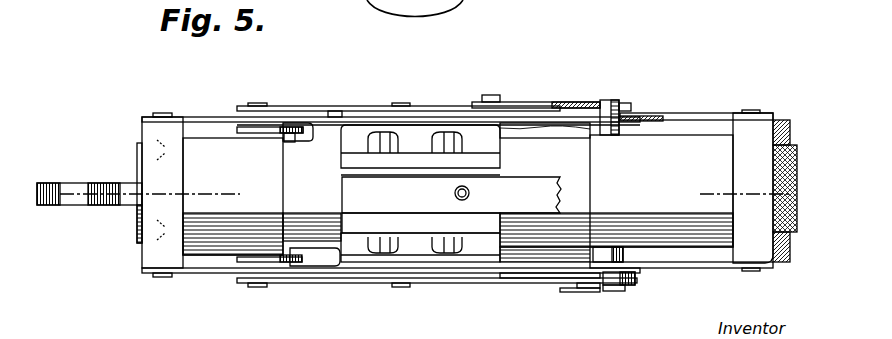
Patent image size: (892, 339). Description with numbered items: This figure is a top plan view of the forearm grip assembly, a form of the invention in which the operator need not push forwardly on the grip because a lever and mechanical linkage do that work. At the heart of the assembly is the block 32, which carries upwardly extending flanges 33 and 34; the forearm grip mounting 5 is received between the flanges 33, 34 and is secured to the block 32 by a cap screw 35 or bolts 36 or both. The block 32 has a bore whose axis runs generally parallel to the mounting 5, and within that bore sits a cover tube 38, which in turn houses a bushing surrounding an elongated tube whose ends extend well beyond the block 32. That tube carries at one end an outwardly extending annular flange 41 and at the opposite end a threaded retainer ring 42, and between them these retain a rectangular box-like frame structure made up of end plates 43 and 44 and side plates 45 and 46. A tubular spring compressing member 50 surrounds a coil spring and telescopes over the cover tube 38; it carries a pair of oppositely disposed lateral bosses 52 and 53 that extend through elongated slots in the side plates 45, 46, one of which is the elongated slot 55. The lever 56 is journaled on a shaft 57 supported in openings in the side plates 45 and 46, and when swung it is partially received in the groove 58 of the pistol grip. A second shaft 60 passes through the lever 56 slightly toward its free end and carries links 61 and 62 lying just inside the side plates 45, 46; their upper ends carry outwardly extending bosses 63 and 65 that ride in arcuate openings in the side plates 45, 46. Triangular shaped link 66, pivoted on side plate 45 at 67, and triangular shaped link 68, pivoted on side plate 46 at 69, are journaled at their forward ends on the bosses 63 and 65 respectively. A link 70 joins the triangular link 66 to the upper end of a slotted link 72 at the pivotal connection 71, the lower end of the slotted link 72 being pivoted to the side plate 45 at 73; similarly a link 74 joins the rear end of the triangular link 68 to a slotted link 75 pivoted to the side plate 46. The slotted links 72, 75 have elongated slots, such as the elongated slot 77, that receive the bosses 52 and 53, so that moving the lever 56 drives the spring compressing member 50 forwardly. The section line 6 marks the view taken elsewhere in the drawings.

The forearm grip mounting 5 is at (545, 200).
The section line 6- 6 is at (27, 216).
The block 32 is at (360, 128).
The flange 33 is at (408, 160).
The flange 34 is at (390, 218).
The cap screw 35 is at (470, 193).
The bolts 36 is at (445, 240).
The cover tube 38 is at (580, 232).
The annular flange 41 is at (137, 150).
The threaded retainer ring 42 is at (792, 146).
The end plate 43 is at (152, 245).
The end plate 44 is at (760, 133).
The side plate 45 is at (696, 270).
The side plate 46 is at (688, 113).
The tubular spring compressing member 50 is at (642, 150).
The boss 52 is at (614, 255).
The boss 53 is at (611, 135).
The elongated slot 55 is at (560, 115).
The lever 56 is at (100, 204).
The shaft 57 is at (340, 110).
The groove 58 is at (782, 254).
The shaft 60 is at (289, 141).
The link 61 is at (240, 263).
The link 62 is at (239, 130).
The boss 63 is at (258, 287).
The boss 65 is at (258, 103).
The triangular shaped link 66 is at (370, 275).
The pivot 67 is at (400, 287).
The triangular shaped link 68 is at (440, 107).
The pivot 69 is at (400, 102).
The link 70 is at (523, 290).
The pivotal connection 71 is at (620, 290).
The slotted link 72 is at (638, 278).
The pivot 73 is at (530, 290).
The link 74 is at (527, 102).
The slotted link 75 is at (628, 104).
The elongated slot 77 is at (606, 102).